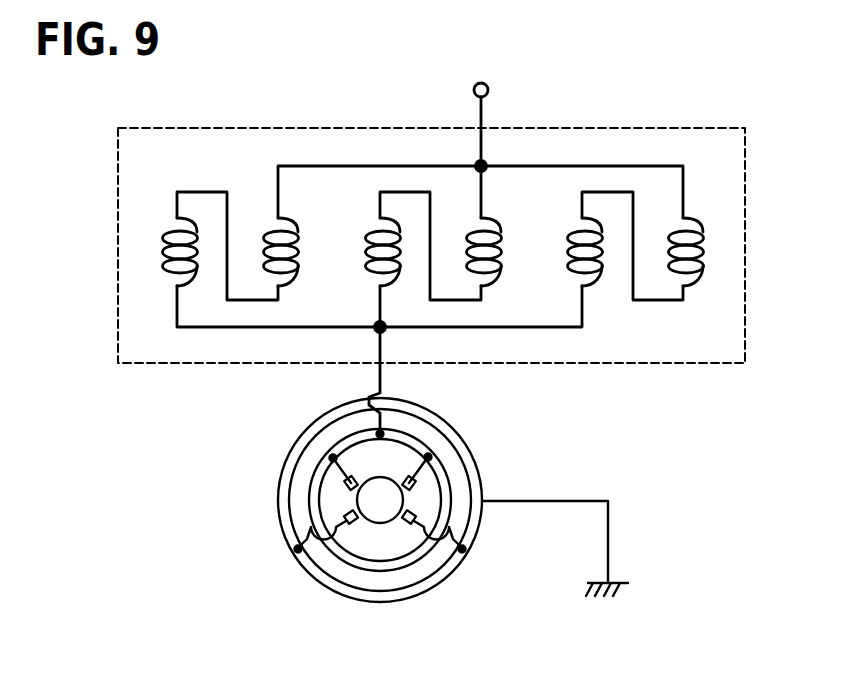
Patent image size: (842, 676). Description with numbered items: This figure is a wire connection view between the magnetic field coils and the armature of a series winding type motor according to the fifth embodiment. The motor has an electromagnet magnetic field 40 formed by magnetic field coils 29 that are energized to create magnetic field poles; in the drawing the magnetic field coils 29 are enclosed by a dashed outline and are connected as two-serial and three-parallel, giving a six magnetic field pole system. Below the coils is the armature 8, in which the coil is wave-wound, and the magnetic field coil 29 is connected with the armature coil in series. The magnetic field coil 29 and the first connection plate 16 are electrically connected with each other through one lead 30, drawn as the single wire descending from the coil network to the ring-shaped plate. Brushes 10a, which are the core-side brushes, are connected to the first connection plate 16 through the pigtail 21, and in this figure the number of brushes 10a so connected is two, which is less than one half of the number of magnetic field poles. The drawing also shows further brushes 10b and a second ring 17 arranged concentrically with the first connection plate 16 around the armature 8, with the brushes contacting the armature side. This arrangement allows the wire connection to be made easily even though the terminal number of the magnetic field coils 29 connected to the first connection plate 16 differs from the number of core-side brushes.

The electromagnet magnetic field 40 is at (645, 128).
The magnetic field coil 29 is at (703, 257).
The lead 30 is at (377, 373).
The armature 8 is at (368, 500).
The pigtail 21 is at (430, 476).
The brush 10a is at (412, 491).
The second terminal 10b is at (405, 523).
The first connection plate 16 is at (343, 553).
The yoke 17 is at (370, 595).